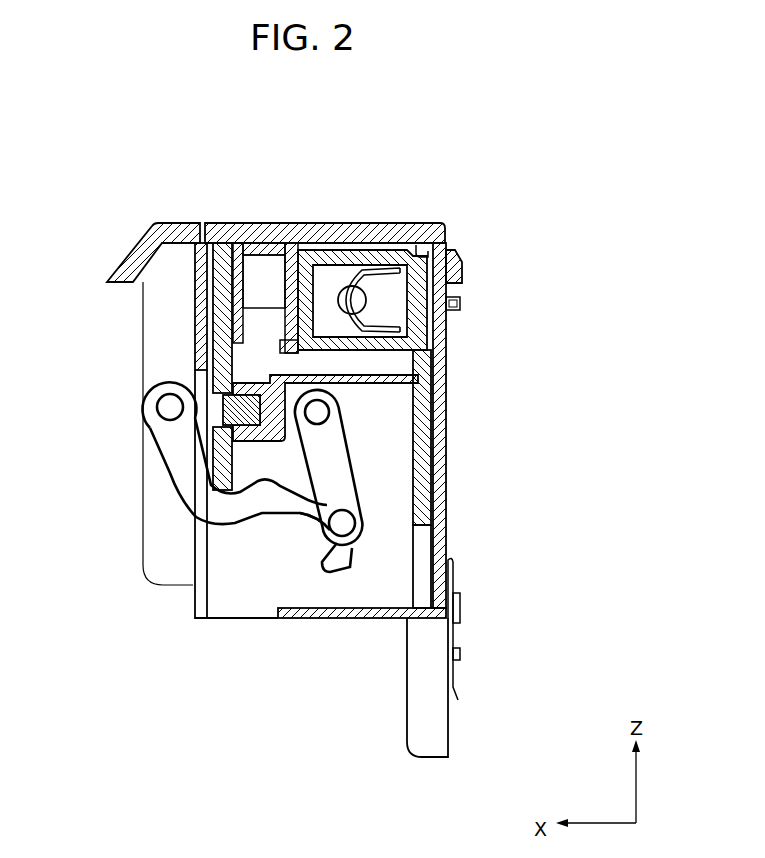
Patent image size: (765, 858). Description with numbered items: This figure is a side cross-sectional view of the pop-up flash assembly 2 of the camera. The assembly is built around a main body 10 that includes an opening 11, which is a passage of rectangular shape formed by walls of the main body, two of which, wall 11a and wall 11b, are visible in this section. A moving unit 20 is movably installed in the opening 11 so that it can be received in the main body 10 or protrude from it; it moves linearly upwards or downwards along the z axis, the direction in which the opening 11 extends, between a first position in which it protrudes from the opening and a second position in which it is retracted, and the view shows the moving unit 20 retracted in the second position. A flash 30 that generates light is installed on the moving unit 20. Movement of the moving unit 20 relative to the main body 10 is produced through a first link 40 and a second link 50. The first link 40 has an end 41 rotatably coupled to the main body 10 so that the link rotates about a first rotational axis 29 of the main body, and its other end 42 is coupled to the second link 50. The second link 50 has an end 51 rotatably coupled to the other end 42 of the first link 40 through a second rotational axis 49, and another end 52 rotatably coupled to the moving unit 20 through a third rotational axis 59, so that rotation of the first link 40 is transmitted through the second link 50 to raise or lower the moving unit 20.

The pop-up flash assembly 2 is at (398, 215).
The main body 10 is at (147, 250).
The opening 11 is at (213, 347).
The wall 11a is at (200, 306).
The wall 11b is at (440, 330).
The moving unit 20 is at (428, 458).
The first rotational axis 29 is at (167, 410).
The flash 30 is at (423, 286).
The first link 40 is at (213, 497).
The end 41 is at (158, 392).
The other end 42 is at (305, 523).
The second rotational axis 49 is at (332, 550).
The second link 50 is at (333, 485).
The end 51 is at (352, 537).
The other end 52 is at (300, 398).
The third rotational axis 59 is at (323, 415).